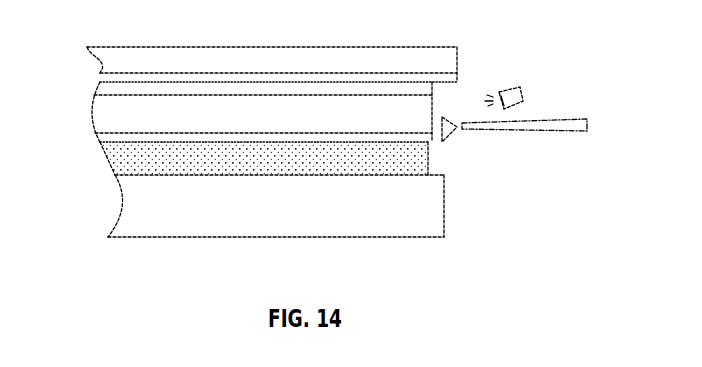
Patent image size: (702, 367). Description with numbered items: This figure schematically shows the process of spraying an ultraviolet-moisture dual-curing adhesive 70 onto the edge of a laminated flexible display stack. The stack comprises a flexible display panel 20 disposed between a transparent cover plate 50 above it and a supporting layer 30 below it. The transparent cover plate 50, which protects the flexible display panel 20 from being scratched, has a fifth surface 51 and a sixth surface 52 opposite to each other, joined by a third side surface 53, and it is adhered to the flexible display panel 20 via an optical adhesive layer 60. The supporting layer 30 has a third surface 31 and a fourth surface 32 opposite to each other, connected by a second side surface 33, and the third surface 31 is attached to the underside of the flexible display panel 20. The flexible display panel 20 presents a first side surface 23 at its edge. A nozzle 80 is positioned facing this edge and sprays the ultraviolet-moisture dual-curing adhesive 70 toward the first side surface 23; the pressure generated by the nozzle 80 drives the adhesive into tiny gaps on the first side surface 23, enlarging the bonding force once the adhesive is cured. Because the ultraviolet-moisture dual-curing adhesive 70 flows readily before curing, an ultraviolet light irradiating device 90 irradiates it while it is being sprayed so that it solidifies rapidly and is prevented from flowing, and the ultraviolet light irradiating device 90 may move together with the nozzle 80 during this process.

The flexible display panel 20 is at (254, 112).
The first side surface 23 is at (433, 104).
The supporting layer 30 is at (273, 227).
The third surface 31 is at (115, 176).
The fourth surface 32 is at (350, 238).
The second side surface 33 is at (446, 228).
The transparent cover plate 50 is at (266, 47).
The fifth surface 51 is at (157, 47).
The sixth surface 52 is at (98, 74).
The third side surface 53 is at (458, 48).
The optical adhesive layer 60 is at (235, 80).
The ultraviolet-moisture dual-curing adhesive 70 is at (450, 140).
The nozzle 80 is at (543, 122).
The ultraviolet light irradiating device 90 is at (520, 88).